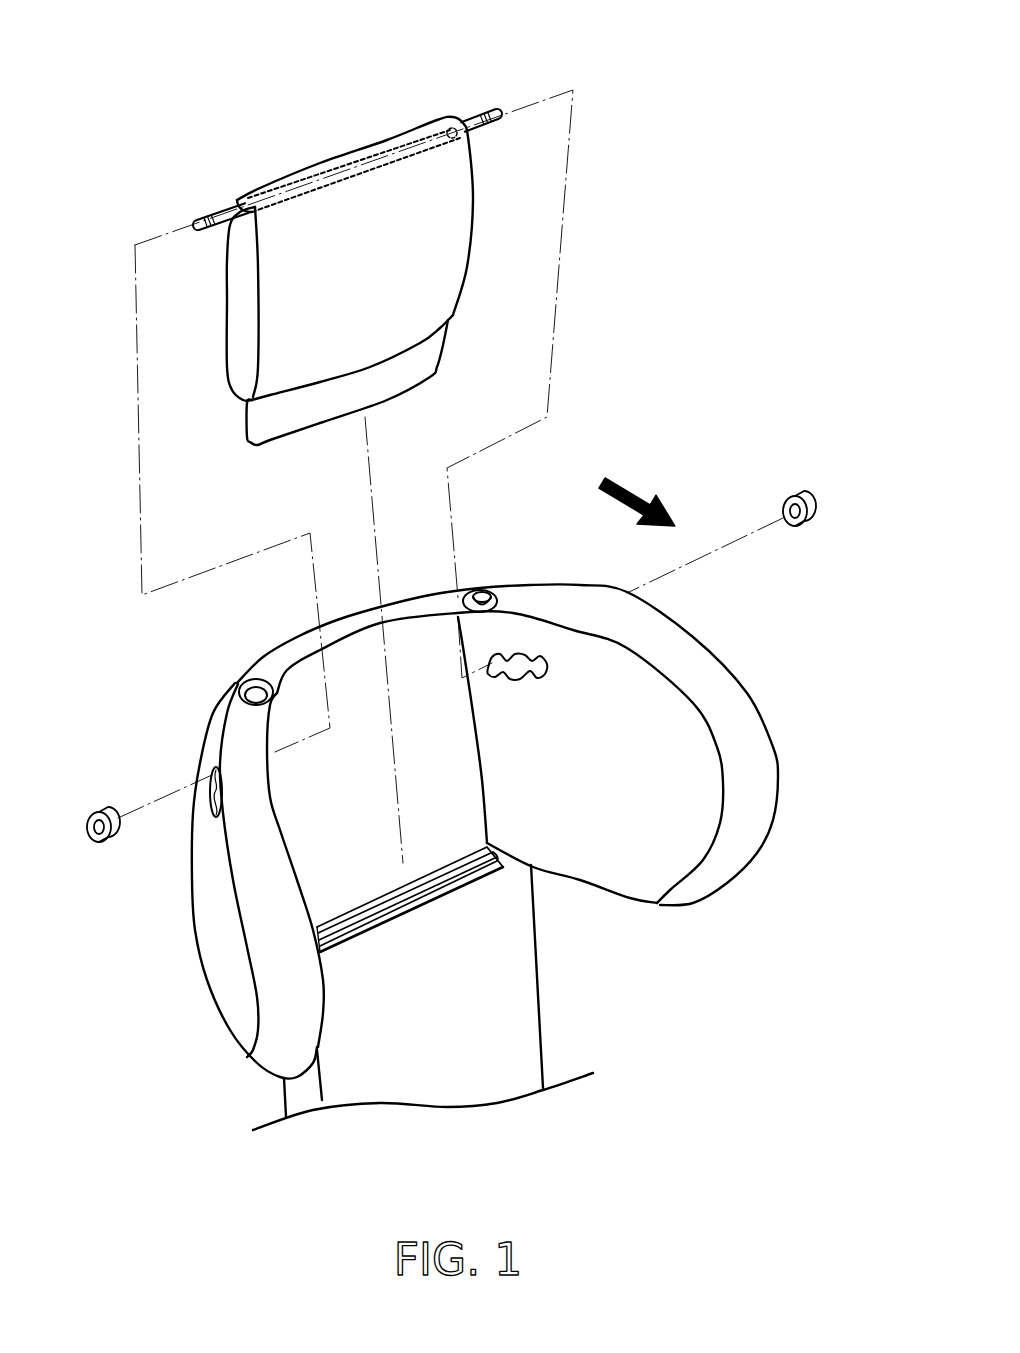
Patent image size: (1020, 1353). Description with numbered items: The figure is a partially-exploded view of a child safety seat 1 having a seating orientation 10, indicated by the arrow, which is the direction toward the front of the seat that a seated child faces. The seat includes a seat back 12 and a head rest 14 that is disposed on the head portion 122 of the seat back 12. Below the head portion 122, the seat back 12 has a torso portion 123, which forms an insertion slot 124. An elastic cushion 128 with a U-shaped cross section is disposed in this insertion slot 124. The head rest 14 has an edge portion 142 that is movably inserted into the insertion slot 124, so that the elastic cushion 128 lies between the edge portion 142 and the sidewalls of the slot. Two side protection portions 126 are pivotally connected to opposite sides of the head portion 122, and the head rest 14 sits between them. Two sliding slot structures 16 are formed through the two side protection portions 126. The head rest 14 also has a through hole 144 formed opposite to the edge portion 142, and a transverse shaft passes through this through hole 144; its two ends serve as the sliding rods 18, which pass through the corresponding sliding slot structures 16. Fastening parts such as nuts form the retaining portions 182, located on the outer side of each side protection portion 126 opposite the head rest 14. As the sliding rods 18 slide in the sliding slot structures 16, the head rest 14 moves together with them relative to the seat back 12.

The child safety seat 1 is at (692, 66).
The seating orientation 10 is at (628, 492).
The seat back 12 is at (664, 1025).
The head rest 14 is at (443, 245).
The sliding slot structure 16 is at (523, 648).
The sliding rod 18 is at (473, 122).
The head portion 122 is at (357, 663).
The torso portion 123 is at (525, 1003).
The insertion slot 124 is at (382, 915).
The side protection portion 126 is at (232, 1015).
The elastic cushion 128 is at (403, 893).
The edge portion 142 is at (430, 352).
The through hole 144 is at (349, 162).
The retaining portion 182 is at (790, 493).